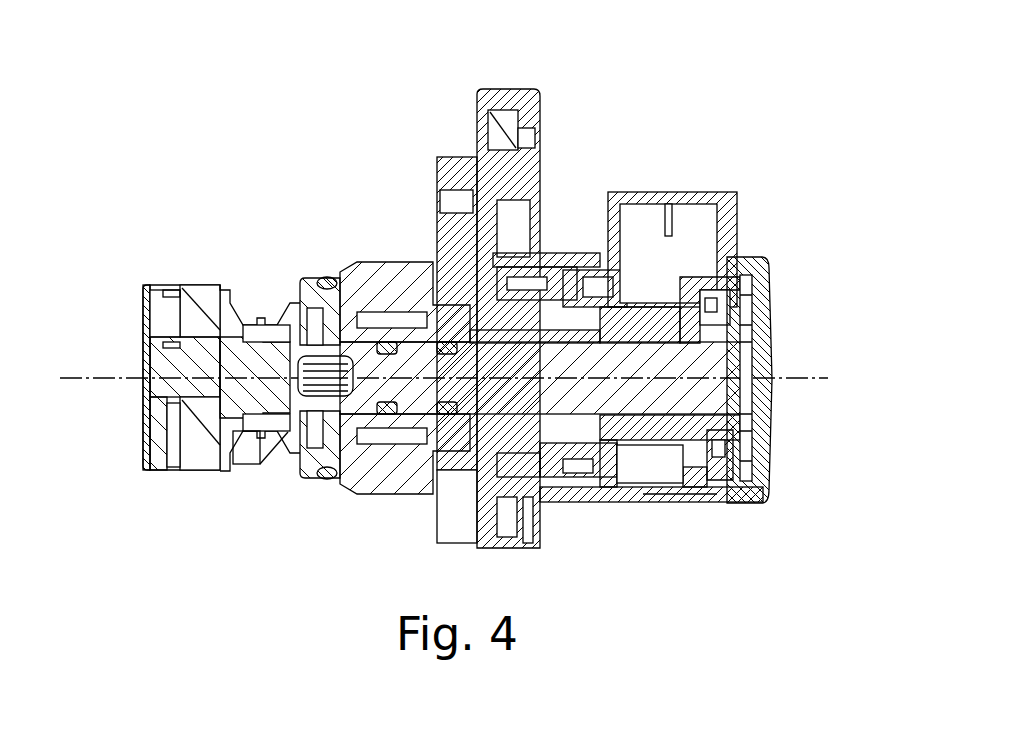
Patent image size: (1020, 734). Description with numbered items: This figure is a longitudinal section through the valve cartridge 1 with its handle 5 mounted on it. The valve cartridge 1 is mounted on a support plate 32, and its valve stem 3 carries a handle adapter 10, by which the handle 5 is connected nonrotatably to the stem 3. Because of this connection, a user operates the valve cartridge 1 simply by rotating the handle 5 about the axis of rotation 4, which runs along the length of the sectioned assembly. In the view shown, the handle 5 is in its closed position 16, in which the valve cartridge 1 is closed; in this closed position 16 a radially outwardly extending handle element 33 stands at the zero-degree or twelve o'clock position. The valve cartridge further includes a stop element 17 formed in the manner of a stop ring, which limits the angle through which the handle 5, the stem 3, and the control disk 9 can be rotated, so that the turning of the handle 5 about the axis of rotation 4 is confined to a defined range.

The valve cartridge 1 is at (800, 100).
The stem 3 is at (567, 395).
The axis of rotation 4 is at (815, 380).
The handle 5 is at (743, 265).
The control disk 9 is at (229, 287).
The handle adapter 10 is at (718, 502).
The closed position 16 is at (726, 142).
The stop element 17 is at (582, 283).
The support plate 32 is at (527, 165).
The handle element 33 is at (665, 192).